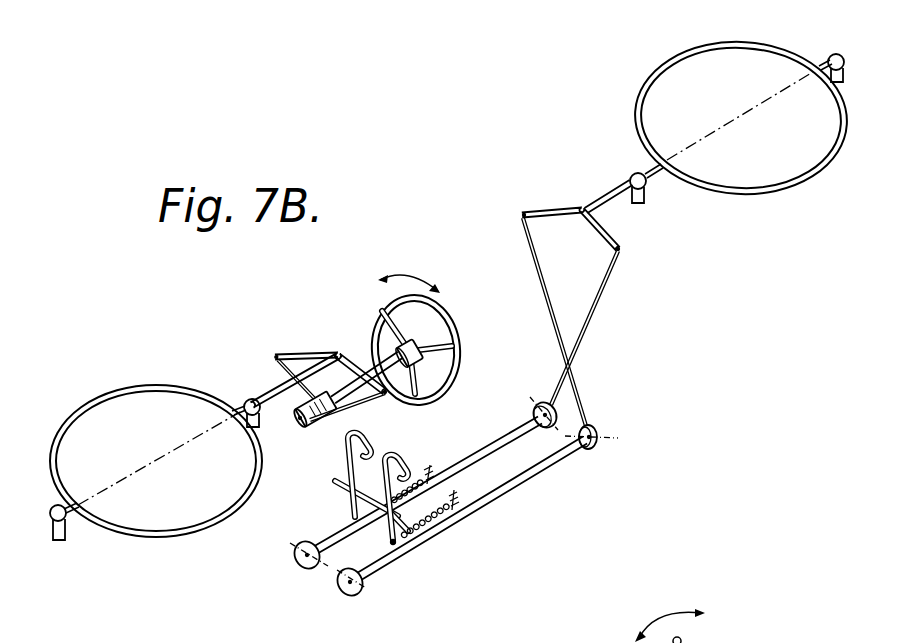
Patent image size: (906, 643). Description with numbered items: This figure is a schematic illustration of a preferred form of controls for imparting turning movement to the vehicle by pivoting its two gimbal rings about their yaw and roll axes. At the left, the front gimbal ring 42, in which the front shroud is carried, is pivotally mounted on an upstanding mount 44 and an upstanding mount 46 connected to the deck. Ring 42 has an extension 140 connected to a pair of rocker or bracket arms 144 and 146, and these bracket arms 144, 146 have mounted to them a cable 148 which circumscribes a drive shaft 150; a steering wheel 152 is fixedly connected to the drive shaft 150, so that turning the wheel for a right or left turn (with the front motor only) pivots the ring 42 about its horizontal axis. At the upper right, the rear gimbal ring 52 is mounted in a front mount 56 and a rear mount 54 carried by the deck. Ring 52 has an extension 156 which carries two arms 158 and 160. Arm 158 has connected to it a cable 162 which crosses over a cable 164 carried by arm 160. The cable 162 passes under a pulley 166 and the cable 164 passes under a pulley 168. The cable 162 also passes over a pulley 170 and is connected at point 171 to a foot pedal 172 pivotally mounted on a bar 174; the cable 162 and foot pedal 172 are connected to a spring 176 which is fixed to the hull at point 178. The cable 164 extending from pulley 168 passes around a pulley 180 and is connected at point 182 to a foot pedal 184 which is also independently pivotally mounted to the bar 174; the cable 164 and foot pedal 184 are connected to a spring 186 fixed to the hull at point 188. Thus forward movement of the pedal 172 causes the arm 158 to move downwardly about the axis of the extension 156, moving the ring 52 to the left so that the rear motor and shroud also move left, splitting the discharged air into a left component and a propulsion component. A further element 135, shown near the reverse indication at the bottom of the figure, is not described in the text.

The gimbal ring 42 is at (158, 386).
The upstanding mount 44 is at (58, 542).
The upstanding mount 46 is at (245, 402).
The gimbal ring 52 is at (648, 80).
The rear mount 54 is at (843, 60).
The front mount 56 is at (633, 172).
The extension 140 is at (270, 392).
The bracket arm 144 is at (300, 355).
The bracket arm 146 is at (361, 347).
The cable 148 is at (357, 405).
The drive shaft 150 is at (349, 381).
The steering wheel 152 is at (455, 329).
The extension 156 is at (604, 190).
The arm 158 is at (542, 210).
The arm 160 is at (608, 238).
The cable 162 is at (540, 258).
The cable 164 is at (604, 295).
The pulley 166 is at (594, 432).
The pulley 168 is at (545, 401).
The pulley 170 is at (343, 594).
The connection point 171 is at (397, 545).
The foot pedal 172 is at (389, 466).
The bar 174 is at (378, 512).
The spring 176 is at (450, 520).
The fixing point 178 is at (458, 505).
The pulley 180 is at (300, 565).
The connection point 182 is at (350, 515).
The foot pedal 184 is at (345, 470).
The spring 186 is at (428, 468).
The fixing point 188 is at (425, 478).
The reverse lever 135 is at (680, 638).